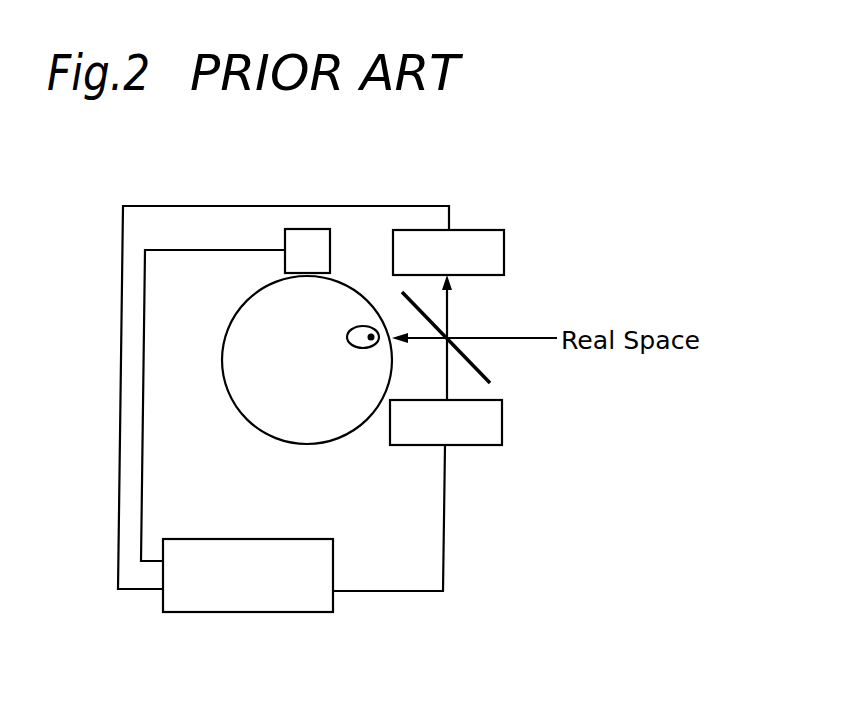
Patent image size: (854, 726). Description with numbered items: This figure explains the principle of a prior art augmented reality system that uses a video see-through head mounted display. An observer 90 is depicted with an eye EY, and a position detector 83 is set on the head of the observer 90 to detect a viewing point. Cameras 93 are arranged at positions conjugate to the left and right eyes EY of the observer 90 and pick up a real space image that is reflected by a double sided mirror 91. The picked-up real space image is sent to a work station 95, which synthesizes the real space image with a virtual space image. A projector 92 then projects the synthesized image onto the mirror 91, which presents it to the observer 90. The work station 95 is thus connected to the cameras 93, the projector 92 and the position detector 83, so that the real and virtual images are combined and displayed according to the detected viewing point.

The position detector 83 is at (304, 229).
The observer 90 is at (238, 311).
The eyes EY is at (347, 337).
The double sided mirror 91 is at (477, 366).
The projector 92 is at (502, 422).
The cameras 93 is at (504, 252).
The work station 95 is at (247, 612).